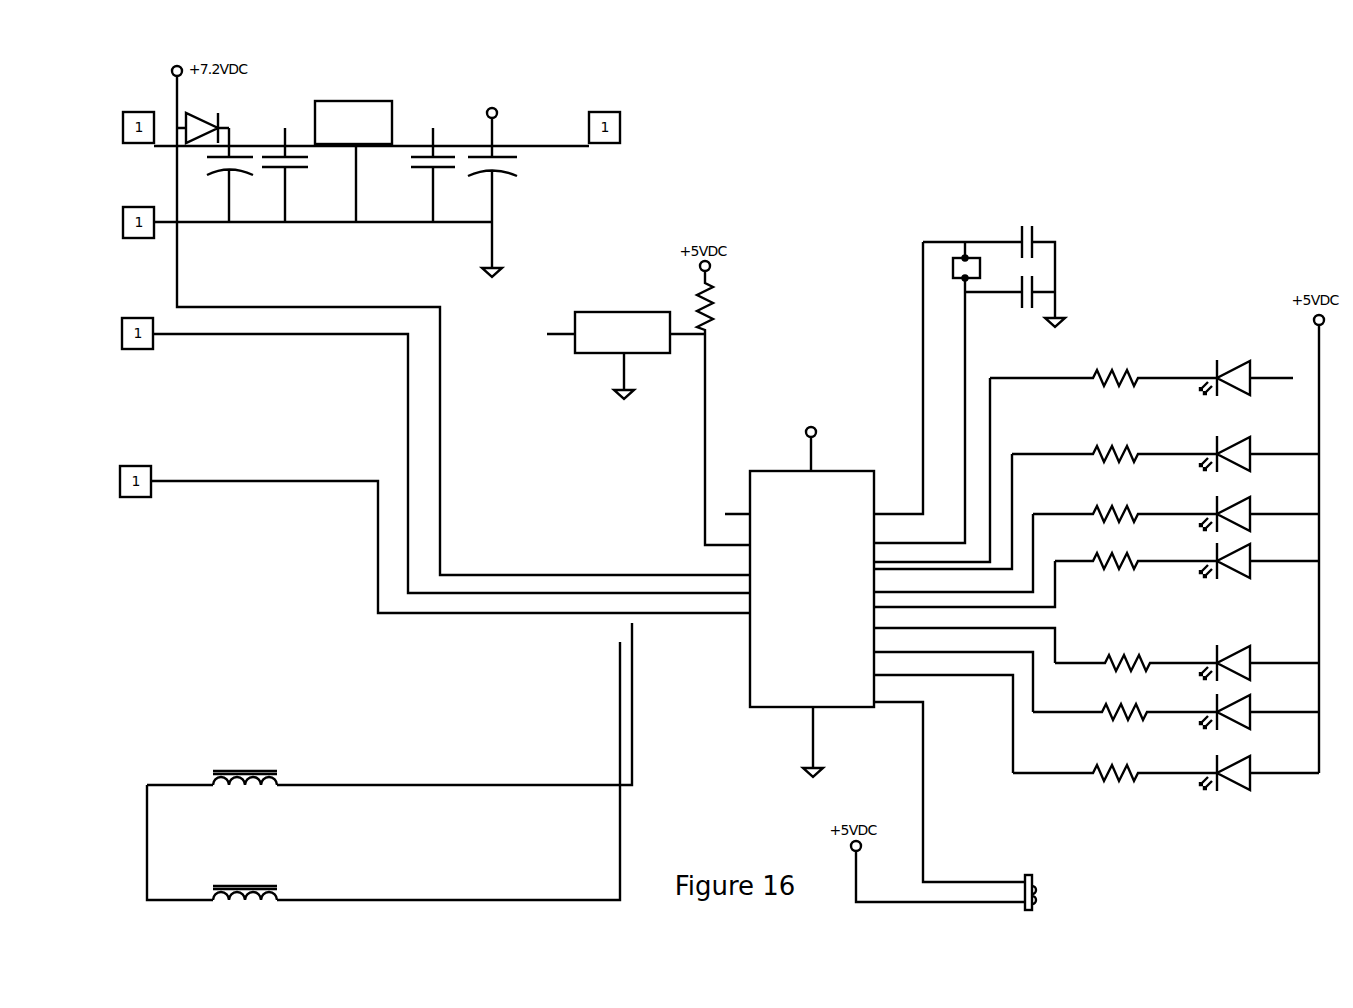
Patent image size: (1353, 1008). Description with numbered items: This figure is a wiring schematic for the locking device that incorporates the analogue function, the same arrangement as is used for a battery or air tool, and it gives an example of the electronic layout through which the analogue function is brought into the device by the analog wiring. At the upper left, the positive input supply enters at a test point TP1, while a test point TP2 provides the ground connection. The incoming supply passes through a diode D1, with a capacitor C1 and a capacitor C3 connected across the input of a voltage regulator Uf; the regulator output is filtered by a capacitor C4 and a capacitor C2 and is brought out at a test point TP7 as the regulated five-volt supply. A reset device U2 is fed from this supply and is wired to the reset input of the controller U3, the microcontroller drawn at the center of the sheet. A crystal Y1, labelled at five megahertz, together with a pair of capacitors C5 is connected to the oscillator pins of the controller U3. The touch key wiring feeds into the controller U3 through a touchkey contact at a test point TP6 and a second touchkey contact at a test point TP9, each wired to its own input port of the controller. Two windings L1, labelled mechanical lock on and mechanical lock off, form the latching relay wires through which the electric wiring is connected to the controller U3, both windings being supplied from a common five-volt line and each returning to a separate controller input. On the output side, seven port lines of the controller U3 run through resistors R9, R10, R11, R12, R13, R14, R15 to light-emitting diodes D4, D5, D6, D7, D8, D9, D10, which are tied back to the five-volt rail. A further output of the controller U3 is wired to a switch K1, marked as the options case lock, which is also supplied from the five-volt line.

The test point +7.2VDC TP1 is at (145, 131).
The test point GND TP2 is at (138, 221).
The diode IN5405 D1 is at (194, 141).
The capacitor 47uF C1 is at (244, 175).
The capacitor .1uF C3 is at (303, 175).
The voltage regulator MC7BL05 Uf is at (354, 140).
The capacitor .1uF C4 is at (433, 175).
The capacitor 10uF C2 is at (512, 182).
The test point +5VDC TP7 is at (606, 127).
The reset IC MC34064P U2 is at (602, 331).
The touchkey contact test point TP6 is at (433, 445).
The touchkey contact test point TP9 is at (433, 528).
The microcontroller PIC16C54P U3 is at (816, 598).
The crystal 5MHz Y1 is at (984, 258).
The capacitor 22pF C5 is at (1000, 269).
The resistor 510 R9 is at (1103, 382).
The resistor 510 R10 is at (1114, 453).
The resistor 510 R11 is at (1125, 514).
The resistor 510 R12 is at (1136, 562).
The resistor 510 R13 is at (1136, 660).
The resistor 510 R14 is at (1125, 713).
The resistor 510 R15 is at (1115, 775).
The LED D4 is at (1246, 375).
The LED D5 is at (1259, 450).
The LED D6 is at (1259, 510).
The LED D7 is at (1259, 560).
The LED D8 is at (1259, 657).
The LED D9 is at (1259, 710).
The LED D10 is at (1259, 775).
The inductor mechanical lock L1 is at (389, 773).
The options case lock switch K1 is at (1096, 882).